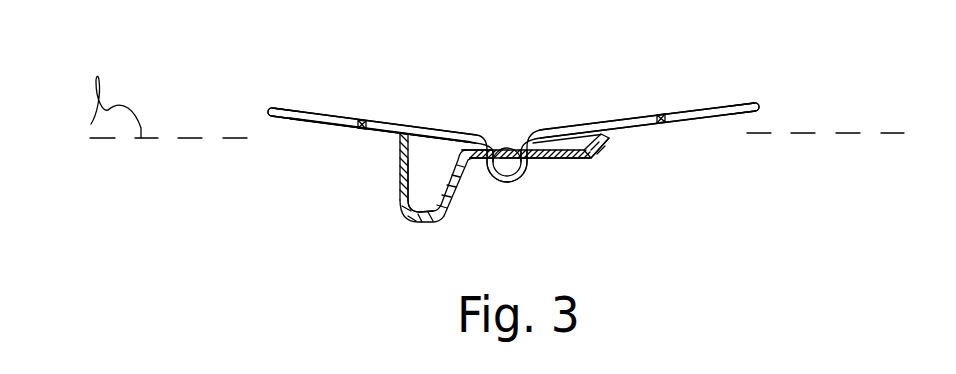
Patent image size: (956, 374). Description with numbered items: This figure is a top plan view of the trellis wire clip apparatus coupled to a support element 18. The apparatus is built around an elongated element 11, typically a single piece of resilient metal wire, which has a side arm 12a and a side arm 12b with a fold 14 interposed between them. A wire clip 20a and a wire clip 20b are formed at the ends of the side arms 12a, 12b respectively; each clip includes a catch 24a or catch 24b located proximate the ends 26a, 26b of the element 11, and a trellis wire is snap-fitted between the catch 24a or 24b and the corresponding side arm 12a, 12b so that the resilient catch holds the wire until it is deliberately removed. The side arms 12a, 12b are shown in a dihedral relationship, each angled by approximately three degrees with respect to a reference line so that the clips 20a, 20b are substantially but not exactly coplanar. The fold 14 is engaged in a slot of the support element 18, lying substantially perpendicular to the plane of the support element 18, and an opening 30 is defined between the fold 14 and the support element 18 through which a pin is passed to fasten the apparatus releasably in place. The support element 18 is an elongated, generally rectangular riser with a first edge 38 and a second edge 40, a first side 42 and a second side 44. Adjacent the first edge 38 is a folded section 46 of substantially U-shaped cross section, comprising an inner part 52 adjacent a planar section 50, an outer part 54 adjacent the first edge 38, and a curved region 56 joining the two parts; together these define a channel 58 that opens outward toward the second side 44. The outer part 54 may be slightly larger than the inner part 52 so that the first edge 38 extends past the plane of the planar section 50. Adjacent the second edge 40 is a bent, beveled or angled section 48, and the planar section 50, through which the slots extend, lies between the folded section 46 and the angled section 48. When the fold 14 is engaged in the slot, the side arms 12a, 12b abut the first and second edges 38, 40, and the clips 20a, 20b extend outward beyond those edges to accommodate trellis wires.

The elongated element 11 is at (537, 130).
The side arm 12a is at (435, 128).
The side arm 12b is at (603, 122).
The fold 14 is at (509, 183).
The support element 18 is at (506, 141).
The wire clip 20a is at (289, 109).
The wire clip 20b is at (724, 107).
The catch 24a is at (338, 118).
The catch 24b is at (688, 112).
The end 26a is at (366, 120).
The end 26b is at (663, 124).
The opening 30 is at (494, 180).
The first edge 38 is at (396, 133).
The second edge 40 is at (611, 141).
The first side 42 is at (584, 157).
The second side 44 is at (567, 149).
The folded section 46 is at (400, 200).
The angled section 48 is at (602, 152).
The planar section 50 is at (546, 160).
The inner part 52 is at (466, 188).
The outer part 54 is at (400, 165).
The curved region 56 is at (421, 221).
The channel 58 is at (432, 207).